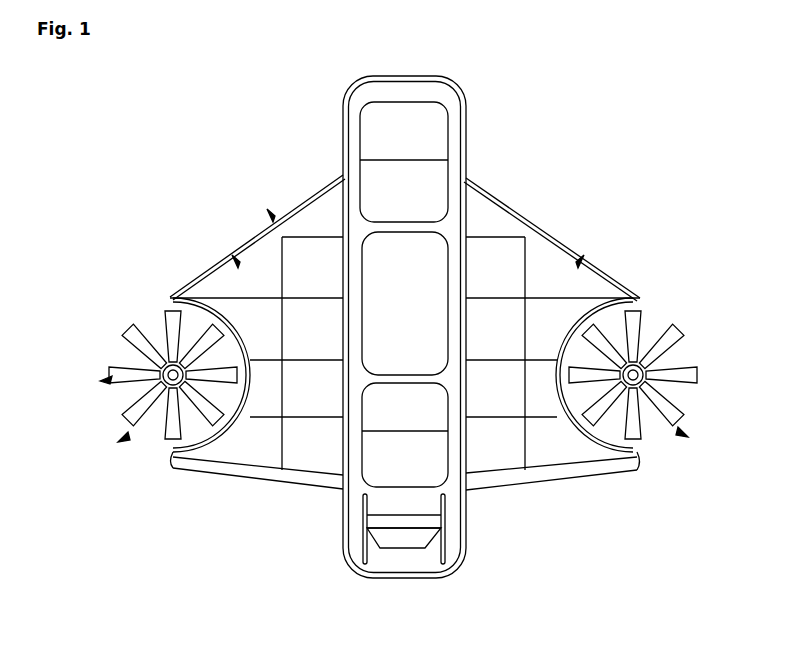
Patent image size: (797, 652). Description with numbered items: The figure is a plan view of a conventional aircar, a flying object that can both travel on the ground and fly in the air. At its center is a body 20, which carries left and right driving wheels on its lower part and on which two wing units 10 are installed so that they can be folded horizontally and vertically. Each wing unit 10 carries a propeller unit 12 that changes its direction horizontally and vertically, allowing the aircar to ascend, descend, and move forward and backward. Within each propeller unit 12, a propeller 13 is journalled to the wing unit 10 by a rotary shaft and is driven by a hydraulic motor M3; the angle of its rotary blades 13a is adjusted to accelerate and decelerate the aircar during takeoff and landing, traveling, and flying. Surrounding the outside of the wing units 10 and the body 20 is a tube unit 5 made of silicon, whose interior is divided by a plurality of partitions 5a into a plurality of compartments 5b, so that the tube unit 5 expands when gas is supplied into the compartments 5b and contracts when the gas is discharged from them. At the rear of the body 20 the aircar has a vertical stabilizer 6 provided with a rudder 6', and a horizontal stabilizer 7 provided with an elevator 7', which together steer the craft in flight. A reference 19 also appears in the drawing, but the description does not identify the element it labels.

The body 20 is at (457, 147).
The tube unit 5 is at (277, 222).
The partition 5a is at (315, 236).
The compartment 5b is at (210, 282).
The wing unit 10 is at (236, 255).
The rotary blade 13a is at (165, 300).
The trailing edge flap 19 is at (165, 450).
The hydraulic motor M3 is at (130, 342).
The propeller 13 is at (105, 378).
The propeller unit 12 is at (122, 437).
The vertical stabilizer 6 is at (367, 529).
The rudder 6' is at (370, 550).
The horizontal stabilizer 7 is at (399, 569).
The elevator 7' is at (404, 574).